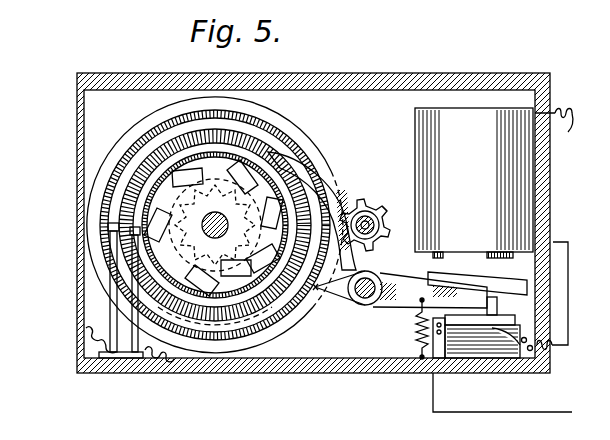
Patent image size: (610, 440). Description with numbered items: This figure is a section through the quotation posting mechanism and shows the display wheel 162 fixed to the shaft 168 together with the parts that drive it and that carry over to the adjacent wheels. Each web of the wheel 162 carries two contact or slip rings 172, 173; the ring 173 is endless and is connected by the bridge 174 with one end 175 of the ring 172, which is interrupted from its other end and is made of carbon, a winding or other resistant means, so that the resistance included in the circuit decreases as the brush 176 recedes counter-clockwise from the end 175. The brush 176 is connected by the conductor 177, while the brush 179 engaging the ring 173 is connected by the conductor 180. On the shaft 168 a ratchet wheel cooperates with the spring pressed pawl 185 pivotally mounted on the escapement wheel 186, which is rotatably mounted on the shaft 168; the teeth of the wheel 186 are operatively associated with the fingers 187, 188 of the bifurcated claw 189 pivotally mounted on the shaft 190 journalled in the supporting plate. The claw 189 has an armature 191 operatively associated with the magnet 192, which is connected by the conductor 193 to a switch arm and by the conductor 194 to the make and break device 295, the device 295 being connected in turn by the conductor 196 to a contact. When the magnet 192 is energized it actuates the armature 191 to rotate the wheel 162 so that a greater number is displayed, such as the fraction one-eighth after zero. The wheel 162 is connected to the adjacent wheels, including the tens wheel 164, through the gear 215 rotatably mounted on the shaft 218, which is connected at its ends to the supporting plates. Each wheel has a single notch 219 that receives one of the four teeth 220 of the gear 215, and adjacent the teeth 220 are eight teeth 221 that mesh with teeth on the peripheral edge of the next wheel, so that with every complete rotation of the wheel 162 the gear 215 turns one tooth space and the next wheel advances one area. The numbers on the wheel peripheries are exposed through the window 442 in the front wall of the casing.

The wheel 162 is at (336, 164).
The wheel 164 is at (137, 133).
The shaft 168 is at (220, 248).
The ring 172 is at (138, 155).
The ring 173 is at (152, 180).
The bridge 174 is at (130, 255).
The end 175 is at (118, 240).
The brush 176 is at (106, 218).
The conductor 177 is at (80, 342).
The brush 179 is at (140, 297).
The conductor 180 is at (170, 363).
The pawl 185 is at (303, 140).
The escapement wheel 186 is at (235, 155).
The finger 187 is at (308, 157).
The finger 188 is at (196, 313).
The bifurcated claw 189 is at (317, 289).
The shaft 190 is at (360, 296).
The armature 191 is at (472, 277).
The magnet 192 is at (486, 152).
The conductor 193 is at (568, 133).
The conductor 194 is at (568, 316).
The conductor 196 is at (512, 413).
The gear 215 is at (393, 232).
The shaft 218 is at (370, 207).
The notch 219 is at (364, 214).
The teeth 220 is at (376, 246).
The teeth 221 is at (393, 205).
The make and break device 295 is at (468, 350).
The window 442 is at (80, 190).